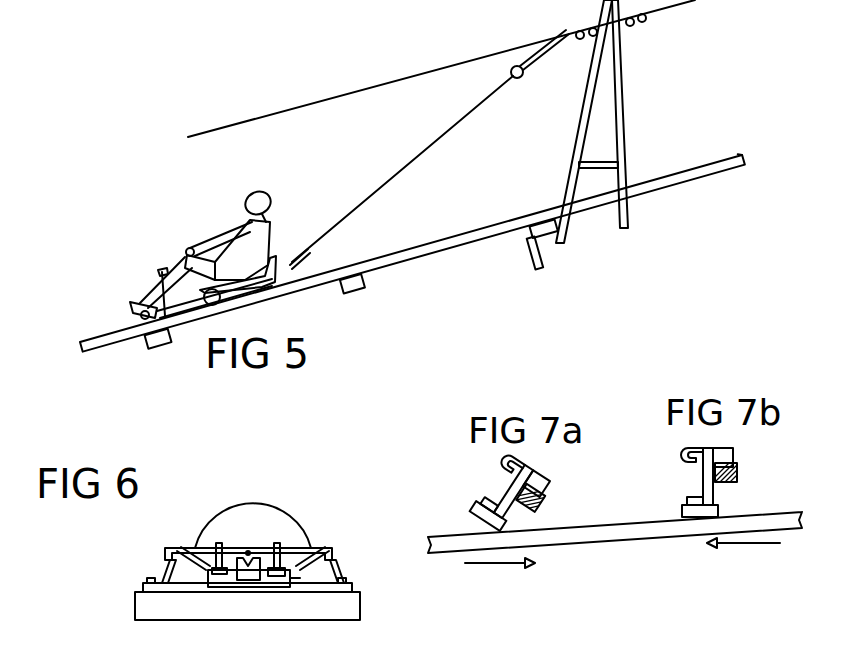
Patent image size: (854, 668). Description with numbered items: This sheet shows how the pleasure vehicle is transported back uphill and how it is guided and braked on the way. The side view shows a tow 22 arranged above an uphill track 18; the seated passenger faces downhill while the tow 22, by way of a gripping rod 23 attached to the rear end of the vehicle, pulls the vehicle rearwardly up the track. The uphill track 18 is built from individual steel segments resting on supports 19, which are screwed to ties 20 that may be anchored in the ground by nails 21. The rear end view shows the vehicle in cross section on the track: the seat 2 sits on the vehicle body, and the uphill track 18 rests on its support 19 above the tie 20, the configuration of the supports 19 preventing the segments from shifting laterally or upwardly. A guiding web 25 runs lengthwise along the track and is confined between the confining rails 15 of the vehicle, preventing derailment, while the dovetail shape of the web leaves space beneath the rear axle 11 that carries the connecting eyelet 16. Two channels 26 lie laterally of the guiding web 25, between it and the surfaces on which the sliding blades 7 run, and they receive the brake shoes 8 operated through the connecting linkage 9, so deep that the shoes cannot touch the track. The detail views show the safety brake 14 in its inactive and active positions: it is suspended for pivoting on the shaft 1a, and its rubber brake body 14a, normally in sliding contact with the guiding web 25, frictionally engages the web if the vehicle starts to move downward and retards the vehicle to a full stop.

In FIG. 7A, the shaft 1a is at (549, 490).
In FIG. 7B, the shaft 1a is at (738, 472).
In FIG. 6, the seat 2 is at (255, 510).
In FIG. 6, the sliding blades 7 is at (186, 547).
In FIG. 6, the brake shoes 8 is at (286, 569).
In FIG. 6, the connecting linkage 9 is at (220, 545).
In FIG. 6, the rear axle 11 is at (266, 548).
In FIG. 7A, the safety brake 14 is at (503, 498).
In FIG. 7B, the safety brake 14 is at (703, 471).
In FIG. 7A, the brake body 14a is at (480, 522).
In FIG. 7B, the brake body 14a is at (690, 512).
In FIG. 6, the confining rails 15 is at (278, 542).
In FIG. 6, the connecting eyelet 16 is at (247, 551).
In FIG. 5, the uphill track 18 is at (688, 178).
In FIG. 6, the uphill track 18 is at (165, 552).
In FIG. 5, the supports 19 is at (366, 283).
In FIG. 6, the supports 19 is at (193, 592).
In FIG. 5, the ties 20 is at (547, 237).
In FIG. 6, the ties 20 is at (362, 606).
In FIG. 5, the nails 21 is at (538, 265).
In FIG. 5, the tow 22 is at (523, 75).
In FIG. 5, the gripping rod 23 is at (312, 254).
In FIG. 6, the guiding web 25 is at (258, 565).
In FIG. 7A, the guiding web 25 is at (603, 535).
In FIG. 6, the channels 26 is at (277, 577).